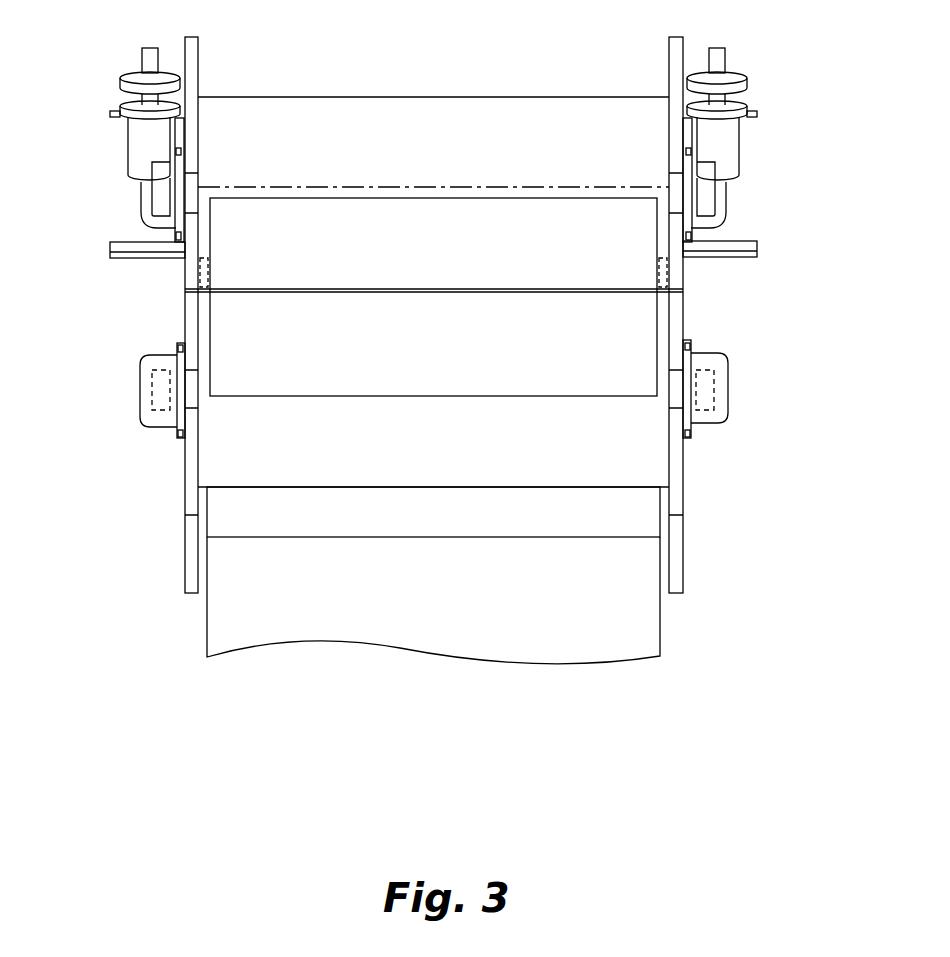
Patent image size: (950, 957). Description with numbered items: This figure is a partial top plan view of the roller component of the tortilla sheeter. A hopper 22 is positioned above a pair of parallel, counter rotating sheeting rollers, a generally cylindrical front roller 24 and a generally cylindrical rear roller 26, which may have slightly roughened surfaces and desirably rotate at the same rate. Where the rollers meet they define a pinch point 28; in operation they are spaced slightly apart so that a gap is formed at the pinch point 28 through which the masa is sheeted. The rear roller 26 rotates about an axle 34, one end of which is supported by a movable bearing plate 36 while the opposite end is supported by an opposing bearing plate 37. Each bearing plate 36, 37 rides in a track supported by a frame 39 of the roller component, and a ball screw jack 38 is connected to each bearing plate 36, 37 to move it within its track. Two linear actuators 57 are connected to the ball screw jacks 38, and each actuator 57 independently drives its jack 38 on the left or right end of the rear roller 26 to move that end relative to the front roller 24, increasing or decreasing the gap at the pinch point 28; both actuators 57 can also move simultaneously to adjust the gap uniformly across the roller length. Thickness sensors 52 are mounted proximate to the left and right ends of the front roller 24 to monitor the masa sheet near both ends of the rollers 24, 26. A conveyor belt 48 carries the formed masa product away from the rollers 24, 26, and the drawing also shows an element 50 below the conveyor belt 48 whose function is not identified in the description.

The hopper 22 is at (647, 248).
The front roller 24 is at (630, 474).
The rear roller 26 is at (327, 115).
The pinch point 28 is at (630, 289).
The axle 34 is at (583, 185).
The movable bearing plate 36 is at (700, 222).
The opposing bearing plate 37 is at (177, 205).
The ball screw jack 38 is at (133, 73).
The frame 39 is at (190, 566).
The conveyor belt 48 is at (240, 517).
The web 50 is at (223, 635).
The thickness sensor 52 is at (200, 272).
The linear actuator 57 is at (446, 122).